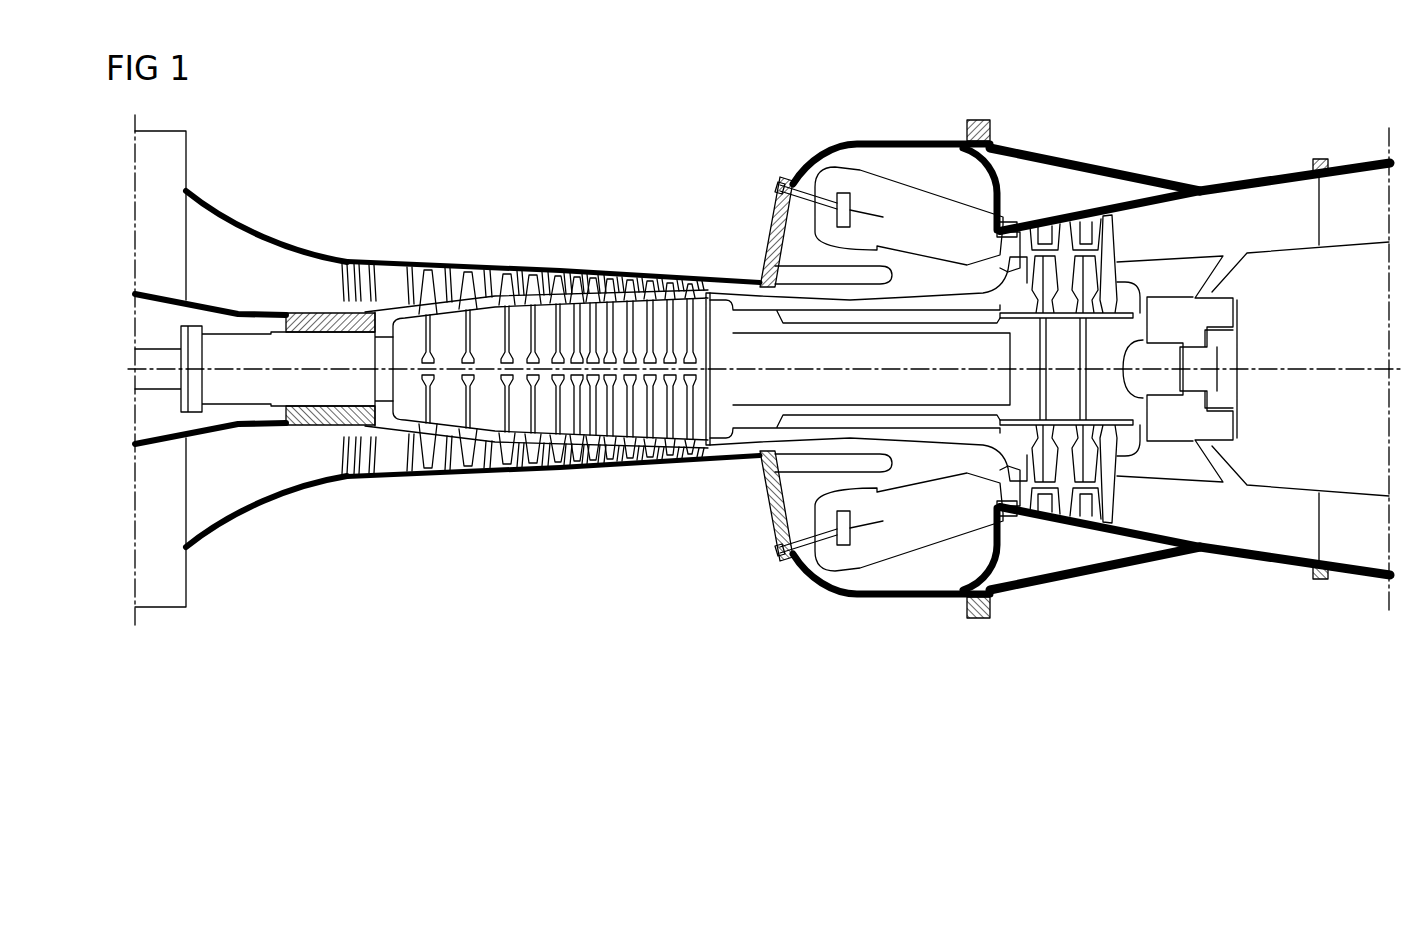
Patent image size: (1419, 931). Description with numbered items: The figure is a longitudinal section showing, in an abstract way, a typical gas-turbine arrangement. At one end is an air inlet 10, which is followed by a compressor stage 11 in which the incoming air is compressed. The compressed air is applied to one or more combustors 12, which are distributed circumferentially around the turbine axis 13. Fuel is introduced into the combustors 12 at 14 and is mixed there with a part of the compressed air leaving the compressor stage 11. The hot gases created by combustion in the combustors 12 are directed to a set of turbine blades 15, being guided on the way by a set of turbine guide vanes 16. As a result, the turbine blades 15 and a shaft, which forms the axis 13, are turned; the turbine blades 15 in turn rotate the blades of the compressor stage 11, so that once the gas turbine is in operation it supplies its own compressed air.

The air inlet 10 is at (177, 166).
The compressor stage 11 is at (557, 251).
The combustor 12 is at (930, 216).
The turbine axis 13 is at (1288, 368).
The fuel introduction point 14 is at (775, 550).
The turbine blades 15 is at (1113, 247).
The turbine guide vanes 16 is at (1048, 230).